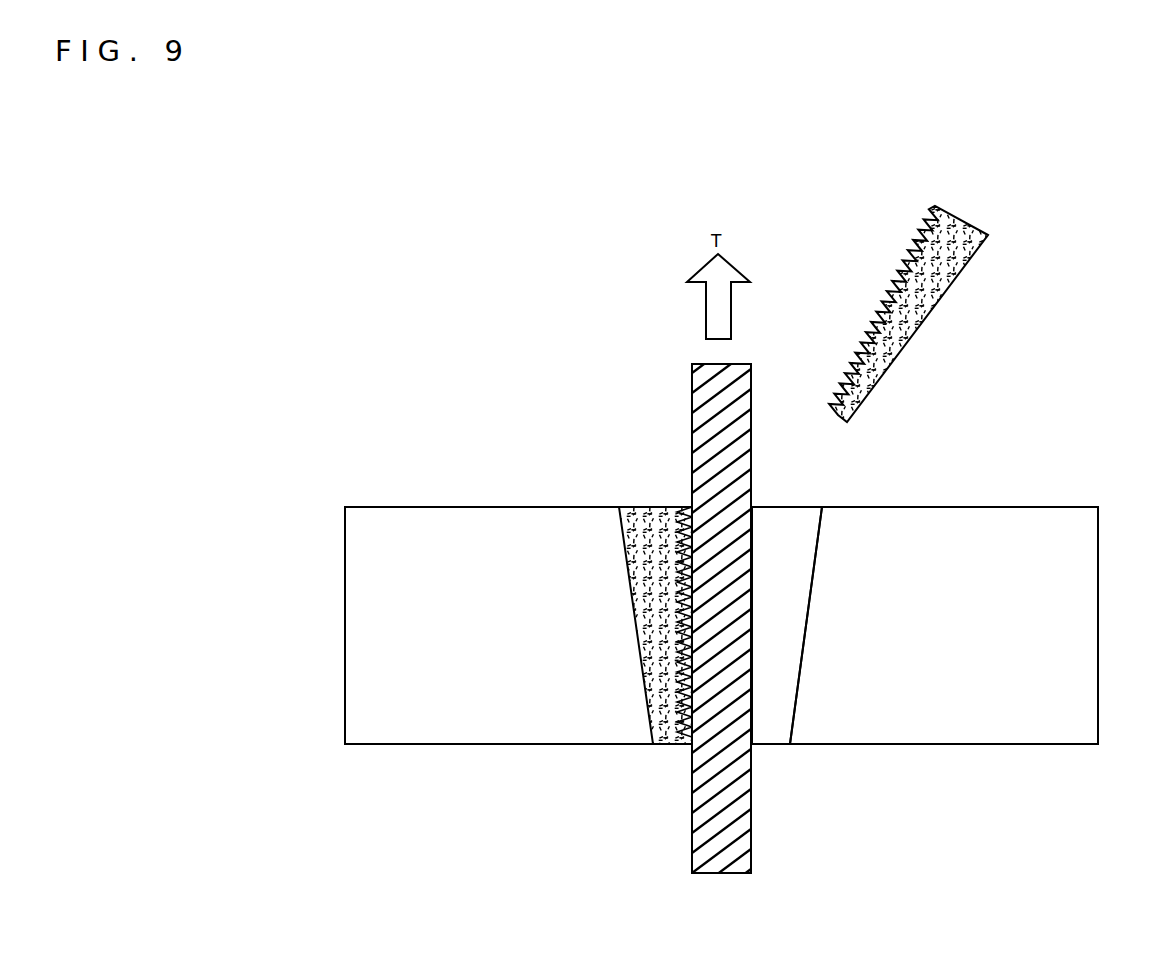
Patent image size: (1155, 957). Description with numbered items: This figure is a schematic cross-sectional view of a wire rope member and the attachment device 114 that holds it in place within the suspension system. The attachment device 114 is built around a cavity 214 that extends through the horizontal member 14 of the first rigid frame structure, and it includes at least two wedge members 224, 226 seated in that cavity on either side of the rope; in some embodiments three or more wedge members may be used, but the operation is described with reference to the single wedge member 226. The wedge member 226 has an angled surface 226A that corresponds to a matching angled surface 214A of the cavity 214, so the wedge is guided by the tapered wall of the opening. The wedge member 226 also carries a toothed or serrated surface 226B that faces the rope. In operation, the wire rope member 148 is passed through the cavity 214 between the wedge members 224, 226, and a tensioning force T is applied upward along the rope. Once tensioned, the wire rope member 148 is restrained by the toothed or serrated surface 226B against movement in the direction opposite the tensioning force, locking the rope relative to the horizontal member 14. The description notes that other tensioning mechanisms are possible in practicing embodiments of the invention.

The horizontal member 14 is at (425, 547).
The attachment device 114 is at (610, 480).
The wire rope member 148 is at (691, 413).
The wedge member 224 is at (655, 532).
The cavity 214 is at (797, 525).
The angled surface of cavity 214A is at (818, 555).
The wedge member 226 is at (992, 277).
The angled surface of wedge member 226A is at (920, 323).
The toothed or serrated surface 226B is at (880, 300).